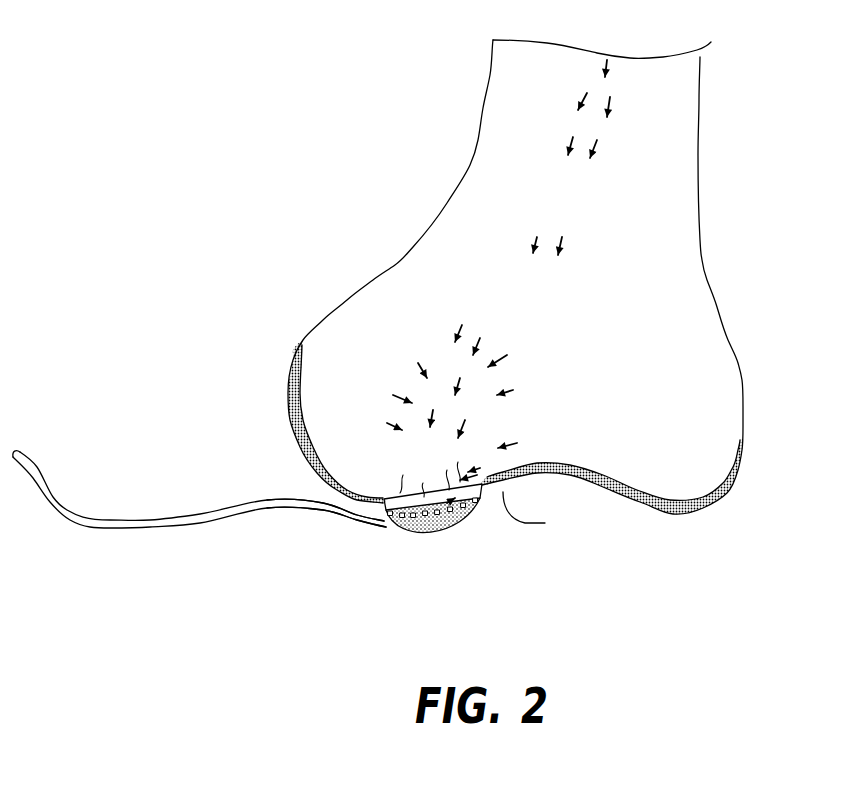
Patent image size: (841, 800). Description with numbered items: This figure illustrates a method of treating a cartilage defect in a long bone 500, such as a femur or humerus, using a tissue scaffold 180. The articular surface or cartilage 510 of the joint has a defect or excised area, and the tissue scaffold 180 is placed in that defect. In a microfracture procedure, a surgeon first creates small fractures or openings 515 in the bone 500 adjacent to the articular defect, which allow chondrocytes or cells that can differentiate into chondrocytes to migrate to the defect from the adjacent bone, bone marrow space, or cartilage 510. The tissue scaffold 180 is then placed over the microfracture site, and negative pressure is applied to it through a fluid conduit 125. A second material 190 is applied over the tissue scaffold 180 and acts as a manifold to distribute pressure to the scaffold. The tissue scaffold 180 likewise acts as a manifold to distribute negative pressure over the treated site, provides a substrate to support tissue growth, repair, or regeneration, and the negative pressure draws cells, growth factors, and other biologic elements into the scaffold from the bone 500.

The bone 500 is at (357, 233).
The fluid conduit 125 is at (83, 482).
The articular surface or cartilage 510 is at (318, 483).
The fractures or openings 515 is at (482, 488).
The tissue scaffold 180 is at (463, 517).
The second material 190 is at (436, 540).